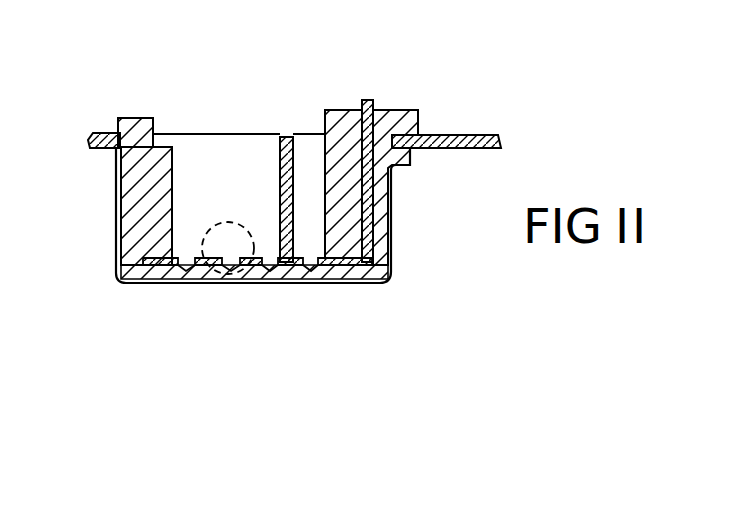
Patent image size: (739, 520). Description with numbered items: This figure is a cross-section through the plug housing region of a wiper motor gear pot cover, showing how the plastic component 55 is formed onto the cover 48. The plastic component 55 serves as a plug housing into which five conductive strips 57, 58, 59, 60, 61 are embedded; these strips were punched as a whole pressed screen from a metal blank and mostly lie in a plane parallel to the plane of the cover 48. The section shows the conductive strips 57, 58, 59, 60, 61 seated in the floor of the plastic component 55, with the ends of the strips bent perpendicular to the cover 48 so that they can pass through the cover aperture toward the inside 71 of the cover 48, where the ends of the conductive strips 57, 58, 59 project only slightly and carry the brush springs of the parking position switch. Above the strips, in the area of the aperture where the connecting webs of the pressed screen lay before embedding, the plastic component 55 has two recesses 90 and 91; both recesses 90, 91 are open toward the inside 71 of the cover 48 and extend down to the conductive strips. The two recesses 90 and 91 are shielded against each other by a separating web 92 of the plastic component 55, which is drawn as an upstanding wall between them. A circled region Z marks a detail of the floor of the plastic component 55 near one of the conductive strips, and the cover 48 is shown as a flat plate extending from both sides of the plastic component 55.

The cover 48 is at (463, 140).
The plastic component 55 is at (383, 262).
The conductive strip 57 is at (138, 277).
The conductive strip 58 is at (203, 260).
The conductive strip 59 is at (255, 258).
The conductive strip 60 is at (290, 258).
The conductive strip 61 is at (341, 258).
The inside of the cover 71 is at (102, 133).
The recess 90 is at (199, 152).
The recess 91 is at (304, 152).
The separating web 92 is at (273, 140).
The sphere region Z is at (228, 222).